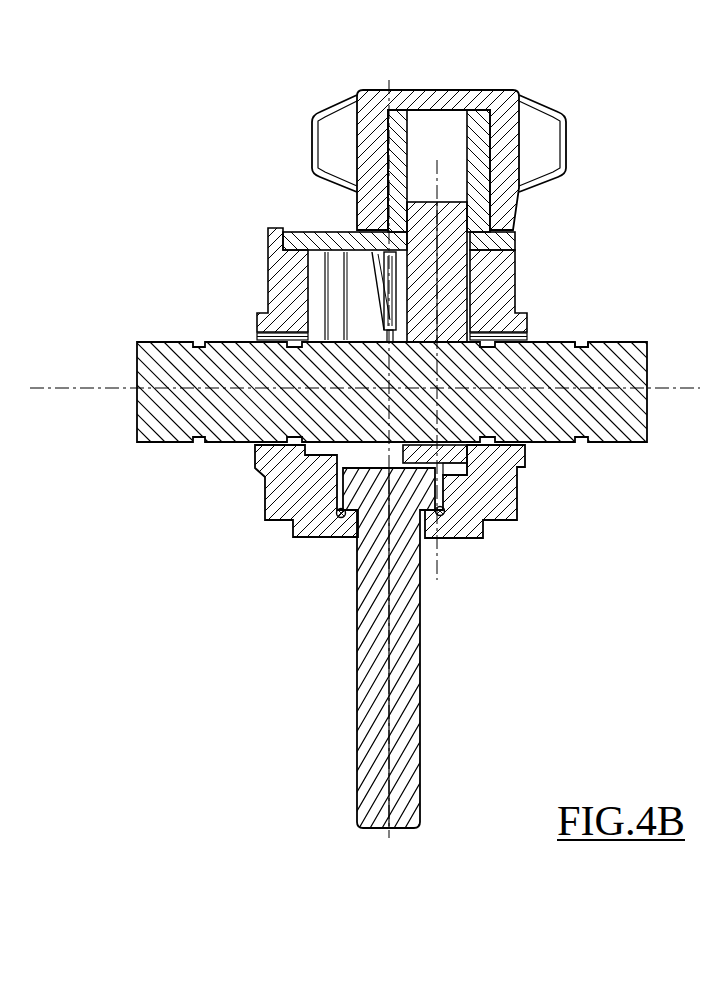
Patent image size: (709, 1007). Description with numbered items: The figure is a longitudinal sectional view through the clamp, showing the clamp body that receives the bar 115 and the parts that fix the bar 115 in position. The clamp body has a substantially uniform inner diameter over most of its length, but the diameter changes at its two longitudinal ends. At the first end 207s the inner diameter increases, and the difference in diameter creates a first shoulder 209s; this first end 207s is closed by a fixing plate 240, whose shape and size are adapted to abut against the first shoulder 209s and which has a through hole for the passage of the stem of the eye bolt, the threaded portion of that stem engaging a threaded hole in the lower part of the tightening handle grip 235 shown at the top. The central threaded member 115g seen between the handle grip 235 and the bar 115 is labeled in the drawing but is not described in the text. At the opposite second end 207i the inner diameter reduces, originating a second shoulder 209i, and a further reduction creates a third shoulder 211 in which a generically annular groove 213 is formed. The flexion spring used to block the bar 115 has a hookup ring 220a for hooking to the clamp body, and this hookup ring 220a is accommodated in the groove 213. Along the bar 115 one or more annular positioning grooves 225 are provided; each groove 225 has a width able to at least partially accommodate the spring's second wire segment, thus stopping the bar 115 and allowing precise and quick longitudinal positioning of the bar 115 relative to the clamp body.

The tightening handle grip 235 is at (489, 91).
The first shoulder 209s is at (510, 245).
The stem 115g is at (452, 270).
The first end 207s is at (268, 234).
The fixing plate 240 is at (268, 256).
The groove 225 is at (582, 342).
The bar 115 is at (640, 342).
The second shoulder 209i is at (458, 473).
The second end 207i is at (513, 503).
The third shoulder 211 is at (445, 505).
The annular groove 213 is at (450, 518).
The hookup ring 220a is at (447, 540).